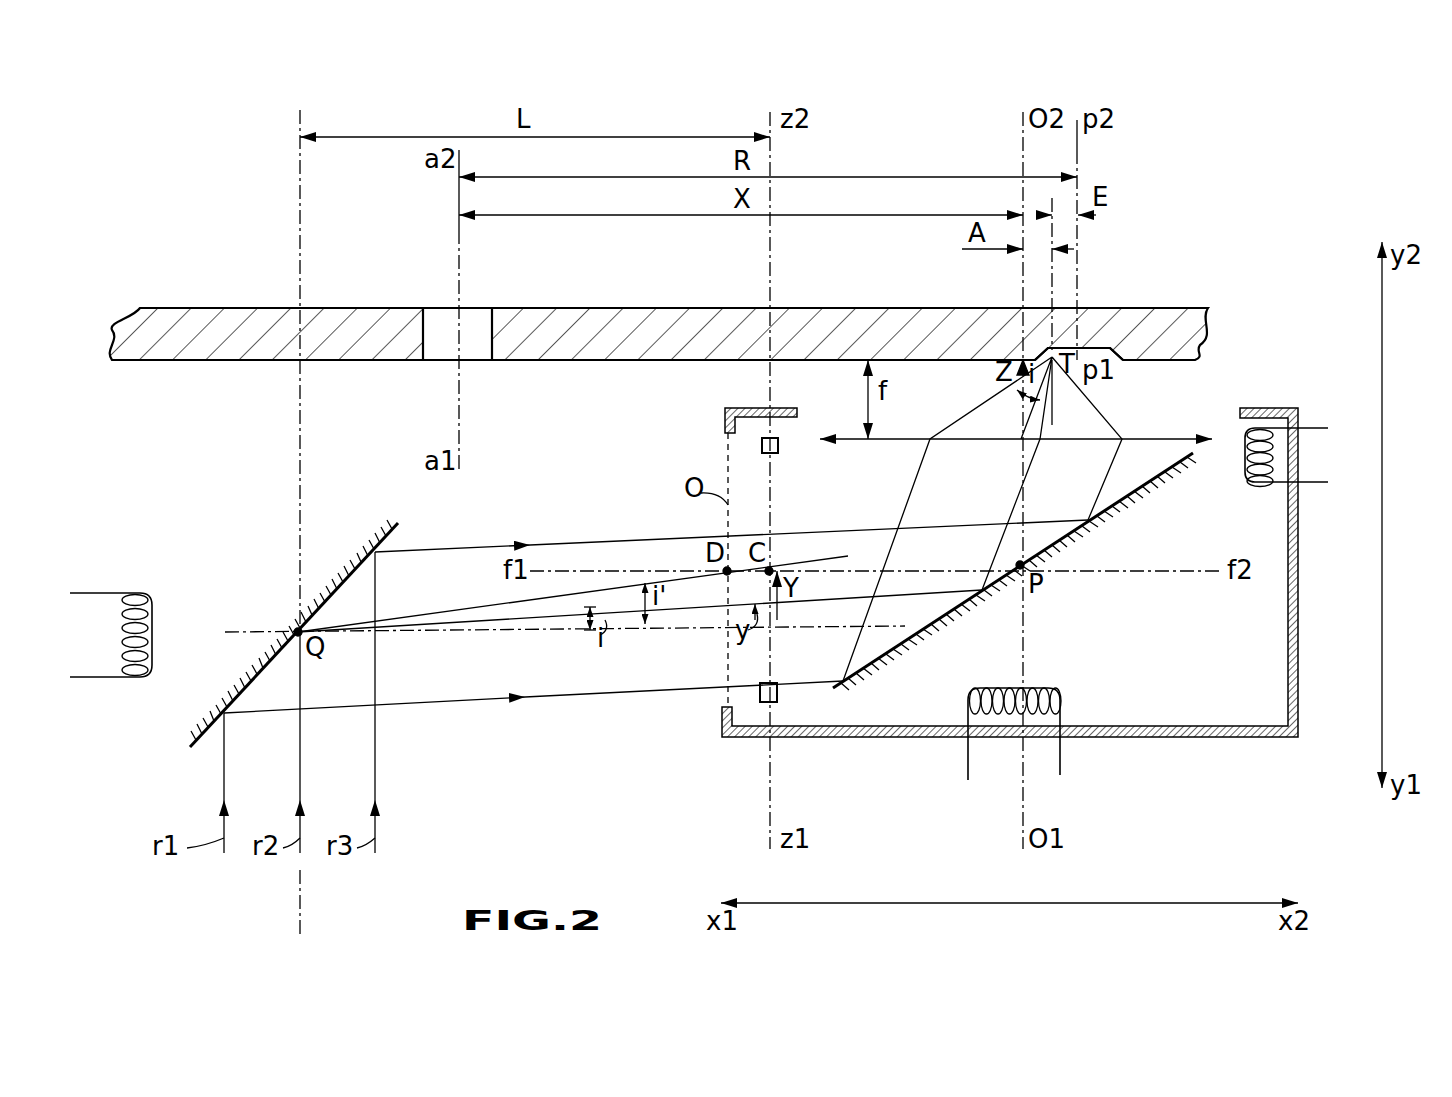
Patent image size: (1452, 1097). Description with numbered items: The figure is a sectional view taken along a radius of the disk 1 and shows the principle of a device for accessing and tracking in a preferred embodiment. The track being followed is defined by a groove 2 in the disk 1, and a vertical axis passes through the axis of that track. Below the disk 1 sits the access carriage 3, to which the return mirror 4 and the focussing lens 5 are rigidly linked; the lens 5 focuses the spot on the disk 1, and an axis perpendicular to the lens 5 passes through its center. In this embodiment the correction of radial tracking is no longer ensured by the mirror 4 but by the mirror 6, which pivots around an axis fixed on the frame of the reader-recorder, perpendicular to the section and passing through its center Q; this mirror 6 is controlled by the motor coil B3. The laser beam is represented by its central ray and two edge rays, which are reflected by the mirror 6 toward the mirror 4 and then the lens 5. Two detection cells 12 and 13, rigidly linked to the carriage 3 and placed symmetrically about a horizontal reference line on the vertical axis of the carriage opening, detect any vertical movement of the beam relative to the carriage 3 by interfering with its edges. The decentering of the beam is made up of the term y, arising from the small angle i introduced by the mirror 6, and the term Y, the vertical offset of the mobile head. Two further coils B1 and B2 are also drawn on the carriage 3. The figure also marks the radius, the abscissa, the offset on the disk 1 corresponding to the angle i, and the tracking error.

The disk 1 is at (1150, 322).
The groove 2 is at (1105, 358).
The access carriage 3 is at (1296, 667).
The return mirror 4 is at (1152, 490).
The focussing lens 5 is at (1148, 439).
The mirror 6 is at (347, 558).
The detection cell 12 is at (757, 446).
The detection cell 13 is at (758, 692).
The coil B1 is at (1308, 484).
The coil B2 is at (1062, 776).
The motor coil B3 is at (100, 592).